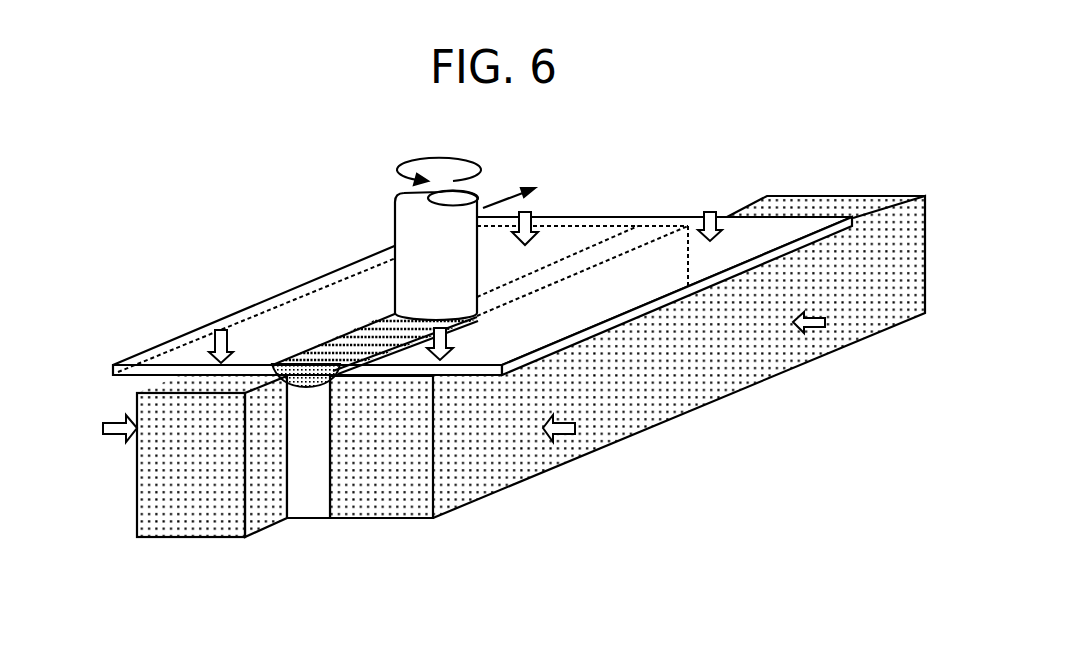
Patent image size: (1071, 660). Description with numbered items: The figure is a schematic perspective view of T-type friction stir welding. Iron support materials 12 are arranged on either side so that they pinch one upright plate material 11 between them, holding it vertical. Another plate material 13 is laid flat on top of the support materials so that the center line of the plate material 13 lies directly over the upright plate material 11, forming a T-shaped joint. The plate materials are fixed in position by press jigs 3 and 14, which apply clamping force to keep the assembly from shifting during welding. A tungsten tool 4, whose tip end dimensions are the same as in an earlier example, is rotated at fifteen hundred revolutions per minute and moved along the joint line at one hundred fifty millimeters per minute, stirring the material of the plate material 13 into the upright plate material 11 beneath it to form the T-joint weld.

The press jig 3 is at (710, 212).
The tungsten tool 4 is at (402, 233).
The upright plate material 11 is at (308, 512).
The iron support materials 12 is at (148, 488).
The plate material 13 is at (162, 348).
The press jig 14 is at (825, 322).